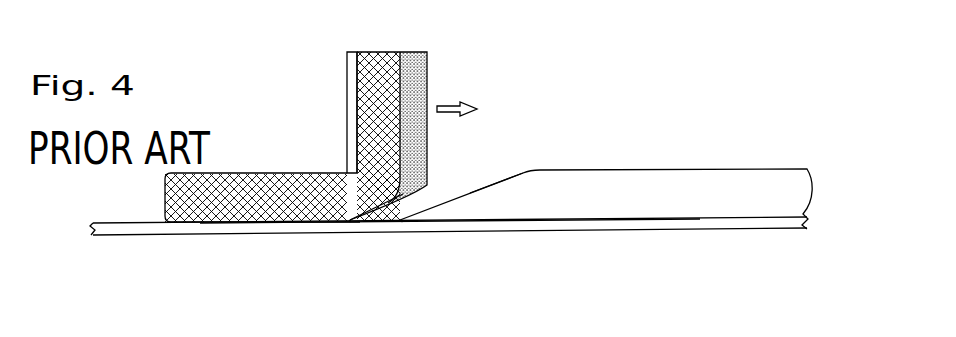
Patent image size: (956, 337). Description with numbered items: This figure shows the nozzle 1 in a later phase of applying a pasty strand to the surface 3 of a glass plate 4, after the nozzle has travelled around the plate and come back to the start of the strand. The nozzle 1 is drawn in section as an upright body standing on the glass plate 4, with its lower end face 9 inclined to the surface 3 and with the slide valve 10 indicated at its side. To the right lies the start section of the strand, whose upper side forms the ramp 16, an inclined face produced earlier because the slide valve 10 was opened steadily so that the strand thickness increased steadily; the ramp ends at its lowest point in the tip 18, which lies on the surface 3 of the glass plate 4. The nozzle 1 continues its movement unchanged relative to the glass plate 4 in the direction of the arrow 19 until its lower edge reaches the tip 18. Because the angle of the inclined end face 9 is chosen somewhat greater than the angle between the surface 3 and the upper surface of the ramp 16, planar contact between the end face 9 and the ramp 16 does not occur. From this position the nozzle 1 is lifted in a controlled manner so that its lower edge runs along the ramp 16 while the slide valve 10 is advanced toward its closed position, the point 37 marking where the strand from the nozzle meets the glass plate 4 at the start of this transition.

The nozzle 1 is at (417, 66).
The surface of the glass plate 3 is at (773, 217).
The glass plate 4 is at (697, 222).
The end face 9 is at (405, 190).
The slide valve 10 is at (349, 135).
The inclined face (ramp) 16 is at (492, 182).
The tip of the start section 18 is at (402, 220).
The arrow (direction of movement) 19 is at (450, 102).
The edge 37 is at (350, 220).